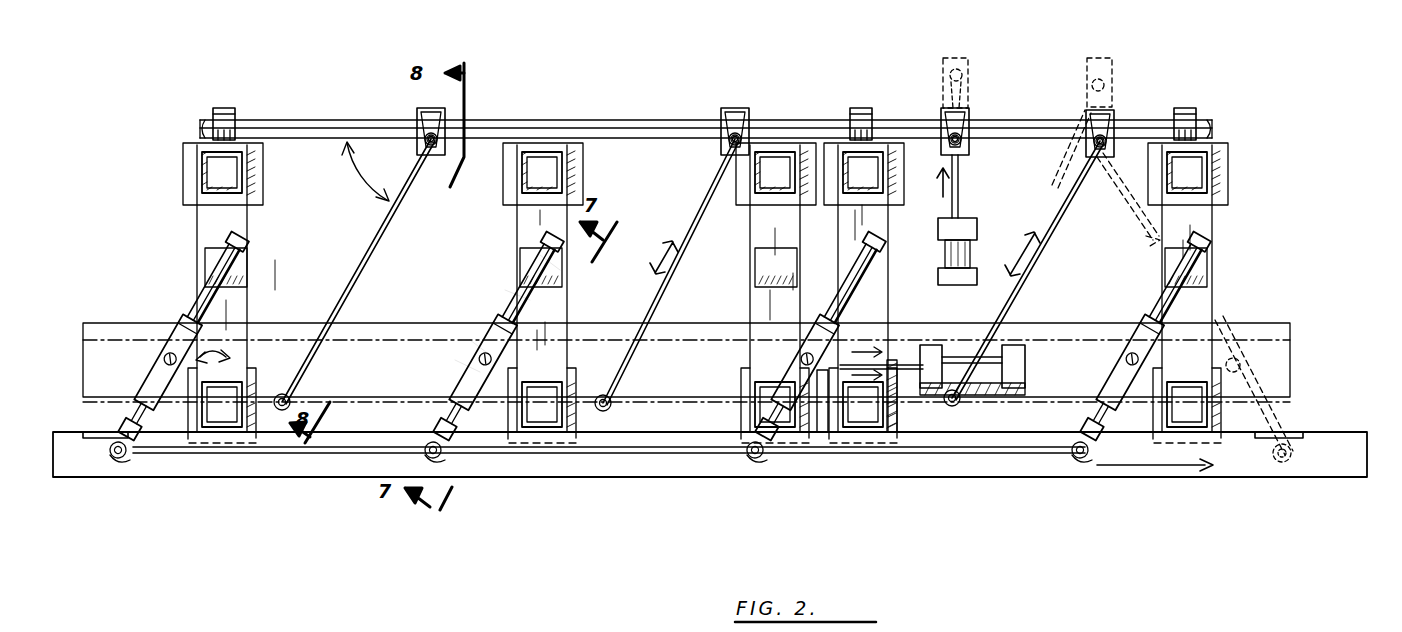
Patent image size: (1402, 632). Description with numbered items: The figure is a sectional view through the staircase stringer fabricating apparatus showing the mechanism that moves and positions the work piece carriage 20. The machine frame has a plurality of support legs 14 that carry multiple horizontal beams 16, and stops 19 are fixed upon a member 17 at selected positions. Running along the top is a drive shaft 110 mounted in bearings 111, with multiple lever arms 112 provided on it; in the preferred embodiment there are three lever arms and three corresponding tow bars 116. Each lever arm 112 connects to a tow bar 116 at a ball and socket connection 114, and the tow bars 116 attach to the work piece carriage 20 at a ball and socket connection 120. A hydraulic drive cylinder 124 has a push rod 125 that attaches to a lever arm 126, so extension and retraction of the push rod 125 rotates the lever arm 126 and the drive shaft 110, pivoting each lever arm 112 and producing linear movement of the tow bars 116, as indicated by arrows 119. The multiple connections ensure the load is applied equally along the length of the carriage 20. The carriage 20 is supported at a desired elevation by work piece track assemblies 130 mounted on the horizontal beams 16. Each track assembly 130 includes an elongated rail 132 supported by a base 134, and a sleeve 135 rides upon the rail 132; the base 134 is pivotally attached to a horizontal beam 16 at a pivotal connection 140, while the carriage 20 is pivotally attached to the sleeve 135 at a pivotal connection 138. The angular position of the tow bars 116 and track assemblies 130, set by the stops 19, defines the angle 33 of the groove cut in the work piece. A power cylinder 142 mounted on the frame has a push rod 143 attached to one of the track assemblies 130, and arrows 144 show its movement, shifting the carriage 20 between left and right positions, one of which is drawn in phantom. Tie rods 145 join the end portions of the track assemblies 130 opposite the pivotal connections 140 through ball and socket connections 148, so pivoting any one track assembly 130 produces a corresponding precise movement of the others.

The support leg 14 is at (200, 178).
The horizontal beam 16 is at (240, 312).
The member 17 is at (715, 470).
The stop 19 is at (100, 434).
The work piece carriage 20 is at (80, 352).
The angle 33 is at (362, 195).
The drive shaft 110 is at (303, 128).
The bearing 111 is at (227, 108).
The lever arm 112 is at (425, 108).
The ball and socket connection 114 is at (433, 158).
The tow bar 116 is at (362, 275).
The arrows 119 is at (650, 266).
The ball and socket connection 120 is at (295, 400).
The hydraulic drive cylinder 124 is at (950, 253).
The push rod 125 is at (962, 190).
The lever arm 126 is at (970, 75).
The work piece track assembly 130 is at (205, 288).
The elongated rail 132 is at (518, 302).
The base 134 is at (545, 262).
The sleeve 135 is at (485, 348).
The pivotal connection 138 is at (470, 367).
The pivotal connection 140 is at (215, 262).
The power cylinder 142 is at (1005, 345).
The push rod 143 is at (903, 445).
The arrows 144 is at (868, 352).
The tie rod 145 is at (336, 462).
The ball and socket connection 148 is at (118, 460).